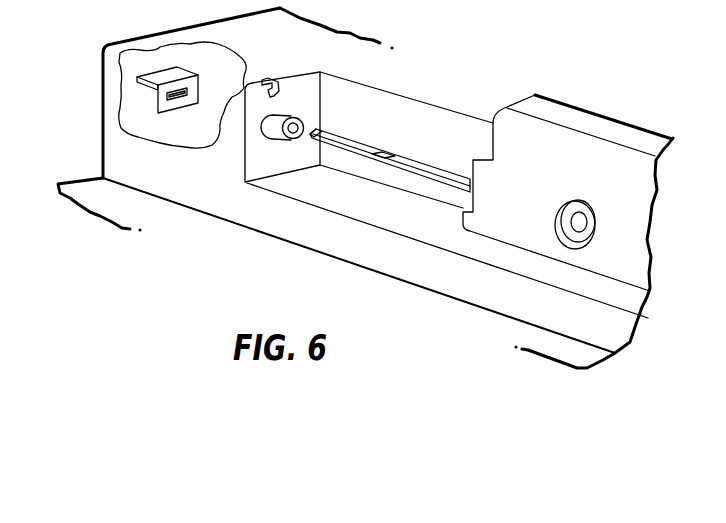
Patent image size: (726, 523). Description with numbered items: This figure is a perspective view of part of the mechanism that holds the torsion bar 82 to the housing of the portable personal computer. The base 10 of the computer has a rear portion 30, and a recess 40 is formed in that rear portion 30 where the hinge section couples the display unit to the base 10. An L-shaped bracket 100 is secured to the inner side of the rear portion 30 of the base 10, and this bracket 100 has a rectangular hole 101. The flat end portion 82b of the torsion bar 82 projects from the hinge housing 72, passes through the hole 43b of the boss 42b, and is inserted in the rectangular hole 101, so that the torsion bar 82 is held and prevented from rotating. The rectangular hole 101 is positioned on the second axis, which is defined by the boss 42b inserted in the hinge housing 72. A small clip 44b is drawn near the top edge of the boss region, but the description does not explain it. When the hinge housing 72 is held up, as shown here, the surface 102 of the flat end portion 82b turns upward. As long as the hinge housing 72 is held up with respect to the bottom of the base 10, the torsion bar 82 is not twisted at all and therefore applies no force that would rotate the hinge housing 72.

The base 10 is at (102, 177).
The rear portion 30 is at (208, 23).
The recess 40 is at (372, 207).
The boss 42b is at (323, 72).
The hole 43b is at (293, 140).
The retaining clip 44b is at (273, 77).
The hinge housing 72 is at (597, 122).
The torsion bar 82 is at (416, 153).
The flat end portion 82b is at (382, 150).
The L-shaped bracket 100 is at (167, 108).
The rectangular hole 101 is at (198, 85).
The surface 102 is at (337, 137).